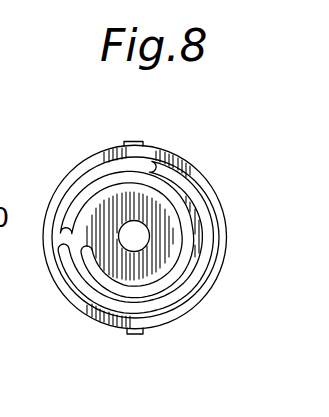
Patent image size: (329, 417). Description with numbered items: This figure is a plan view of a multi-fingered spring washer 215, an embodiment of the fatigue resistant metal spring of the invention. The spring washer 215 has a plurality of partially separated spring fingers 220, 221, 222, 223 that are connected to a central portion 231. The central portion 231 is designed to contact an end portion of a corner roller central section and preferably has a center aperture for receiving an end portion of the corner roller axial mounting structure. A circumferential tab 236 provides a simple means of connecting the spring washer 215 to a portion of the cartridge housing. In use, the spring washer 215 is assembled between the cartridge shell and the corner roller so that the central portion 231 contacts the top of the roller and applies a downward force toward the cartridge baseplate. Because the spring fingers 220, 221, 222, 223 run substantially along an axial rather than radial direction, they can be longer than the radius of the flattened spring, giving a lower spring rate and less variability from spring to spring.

The spring washer 215 is at (150, 327).
The spring finger 220 is at (178, 286).
The spring finger 221 is at (72, 200).
The spring finger 222 is at (95, 288).
The spring finger 223 is at (189, 181).
The central portion 231 is at (162, 237).
The circumferential tab 236 is at (135, 138).